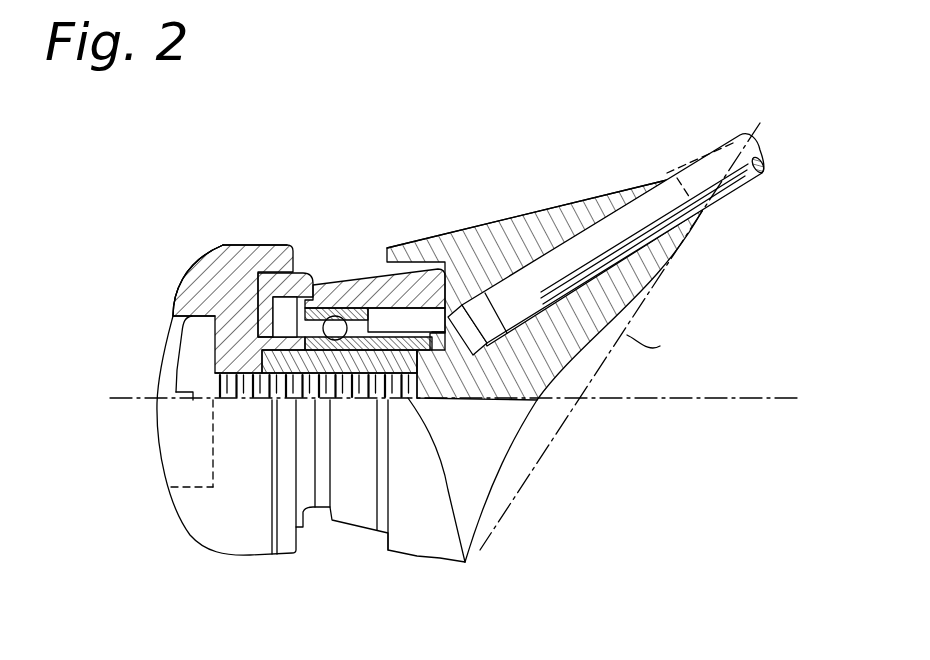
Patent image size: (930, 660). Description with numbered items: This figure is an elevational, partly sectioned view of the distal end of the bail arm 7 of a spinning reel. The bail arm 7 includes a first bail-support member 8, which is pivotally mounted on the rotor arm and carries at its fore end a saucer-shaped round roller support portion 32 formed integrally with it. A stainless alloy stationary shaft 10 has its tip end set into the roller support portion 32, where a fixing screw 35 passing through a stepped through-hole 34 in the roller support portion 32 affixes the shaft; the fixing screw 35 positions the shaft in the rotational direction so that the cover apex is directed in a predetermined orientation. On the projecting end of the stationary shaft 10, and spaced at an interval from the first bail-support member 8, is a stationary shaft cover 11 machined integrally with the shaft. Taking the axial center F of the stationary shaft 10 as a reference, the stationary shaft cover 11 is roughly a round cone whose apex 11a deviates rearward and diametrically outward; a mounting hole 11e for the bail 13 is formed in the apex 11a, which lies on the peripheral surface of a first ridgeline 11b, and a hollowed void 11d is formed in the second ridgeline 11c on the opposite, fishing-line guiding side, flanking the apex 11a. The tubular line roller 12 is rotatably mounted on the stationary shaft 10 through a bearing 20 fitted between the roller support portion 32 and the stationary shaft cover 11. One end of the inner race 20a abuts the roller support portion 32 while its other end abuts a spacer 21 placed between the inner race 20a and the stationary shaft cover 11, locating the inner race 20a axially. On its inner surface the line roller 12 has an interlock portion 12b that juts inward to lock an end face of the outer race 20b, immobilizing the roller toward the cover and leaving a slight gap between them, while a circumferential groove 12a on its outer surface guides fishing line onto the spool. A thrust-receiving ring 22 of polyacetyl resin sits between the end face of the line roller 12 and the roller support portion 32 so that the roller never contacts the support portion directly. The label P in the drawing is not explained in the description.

The bail arm 7 is at (496, 100).
The first bail-support member 8 is at (252, 244).
The stationary shaft 10 is at (357, 313).
The stationary shaft cover 11 is at (507, 243).
The apex 11a is at (748, 131).
The first ridgeline 11b is at (553, 200).
The second ridgeline 11c is at (660, 346).
The hollowed void 11d is at (547, 400).
The mounting hole 11e is at (607, 211).
The line roller 12 is at (345, 300).
The circumferential groove 12a is at (307, 306).
The interlock portion 12b is at (317, 337).
The bail 13 is at (699, 157).
The bearing 20 is at (368, 350).
The inner race 20a is at (368, 357).
The outer race 20b is at (323, 300).
The spacer 21 is at (446, 271).
The thrust-receiving ring 22 is at (258, 298).
The round roller support portion 32 is at (237, 240).
The stepped through-hole 34 is at (180, 325).
The fixing screw 35 is at (200, 376).
The groove P is at (700, 210).
The axial center F is at (462, 400).